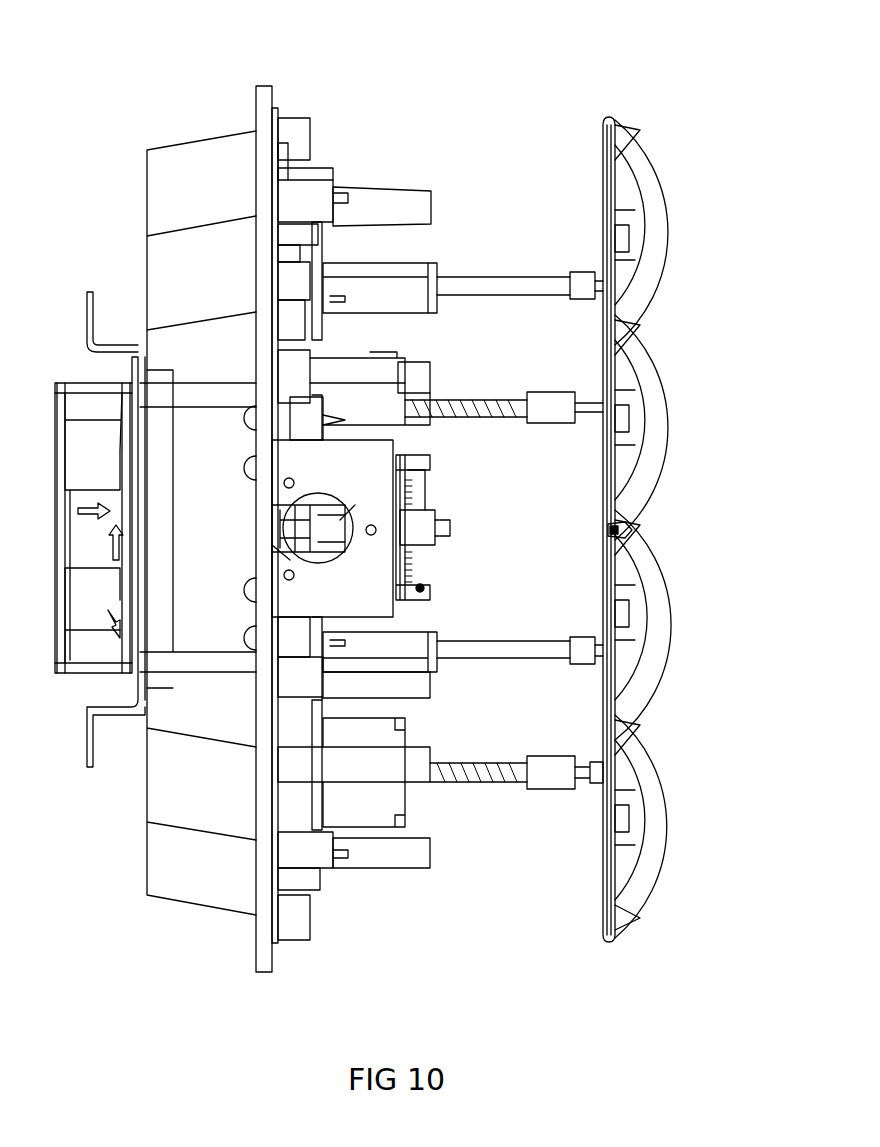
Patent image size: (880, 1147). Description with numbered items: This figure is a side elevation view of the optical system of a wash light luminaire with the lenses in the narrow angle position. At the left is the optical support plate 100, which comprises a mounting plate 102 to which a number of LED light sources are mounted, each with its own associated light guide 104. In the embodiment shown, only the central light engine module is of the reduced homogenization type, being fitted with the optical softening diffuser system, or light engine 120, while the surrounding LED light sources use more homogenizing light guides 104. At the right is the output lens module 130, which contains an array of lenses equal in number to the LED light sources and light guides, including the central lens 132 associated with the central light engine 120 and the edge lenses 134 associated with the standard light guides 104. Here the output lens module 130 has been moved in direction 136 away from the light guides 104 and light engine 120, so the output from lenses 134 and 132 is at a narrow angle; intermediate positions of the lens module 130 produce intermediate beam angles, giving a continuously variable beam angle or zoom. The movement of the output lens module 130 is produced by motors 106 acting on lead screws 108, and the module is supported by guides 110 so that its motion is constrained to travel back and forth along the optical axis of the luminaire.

The optical support plate 100 is at (238, 86).
The mounting plate 102 is at (267, 245).
The light guide 104 is at (375, 203).
The motor 106 is at (362, 792).
The lead screw 108 is at (473, 778).
The guide 110 is at (417, 268).
The optical softening diffuser system (light engine) 120 is at (417, 565).
The output lens module 130 is at (624, 557).
The central lens 132 is at (607, 530).
The edge lens 134 is at (640, 165).
The direction 136 is at (622, 66).